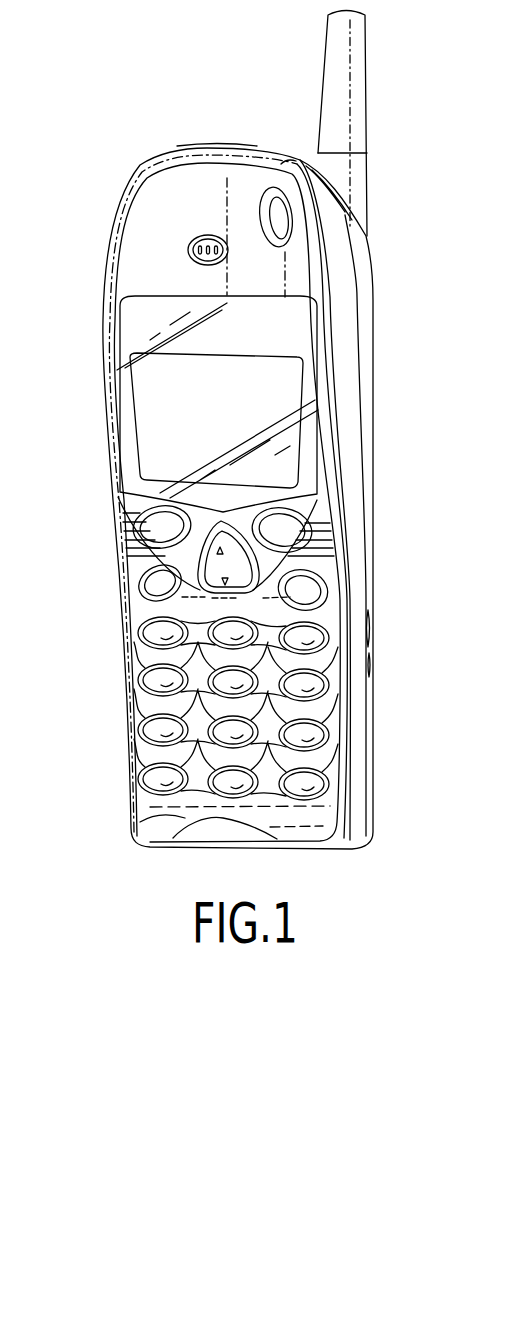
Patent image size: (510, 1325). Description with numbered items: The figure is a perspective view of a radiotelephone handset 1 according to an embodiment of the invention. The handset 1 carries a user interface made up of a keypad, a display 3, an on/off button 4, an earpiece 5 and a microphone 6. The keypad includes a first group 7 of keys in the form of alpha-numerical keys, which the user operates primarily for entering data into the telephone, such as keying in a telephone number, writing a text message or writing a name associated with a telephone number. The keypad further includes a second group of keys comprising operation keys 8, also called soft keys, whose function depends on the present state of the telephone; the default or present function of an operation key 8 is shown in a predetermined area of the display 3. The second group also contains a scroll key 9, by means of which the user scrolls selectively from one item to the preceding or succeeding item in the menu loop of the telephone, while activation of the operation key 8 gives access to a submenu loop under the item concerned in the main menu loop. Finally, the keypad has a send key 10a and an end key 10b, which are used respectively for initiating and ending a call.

The handset 1 is at (375, 247).
The display 3 is at (147, 402).
The on/off button 4 is at (264, 194).
The earpiece 5 is at (190, 250).
The microphone 6 is at (190, 828).
The first group of keys 7 is at (162, 700).
The operation keys 8 is at (142, 523).
The scroll key 9 is at (243, 578).
The send key 10a is at (145, 582).
The end key 10b is at (320, 597).